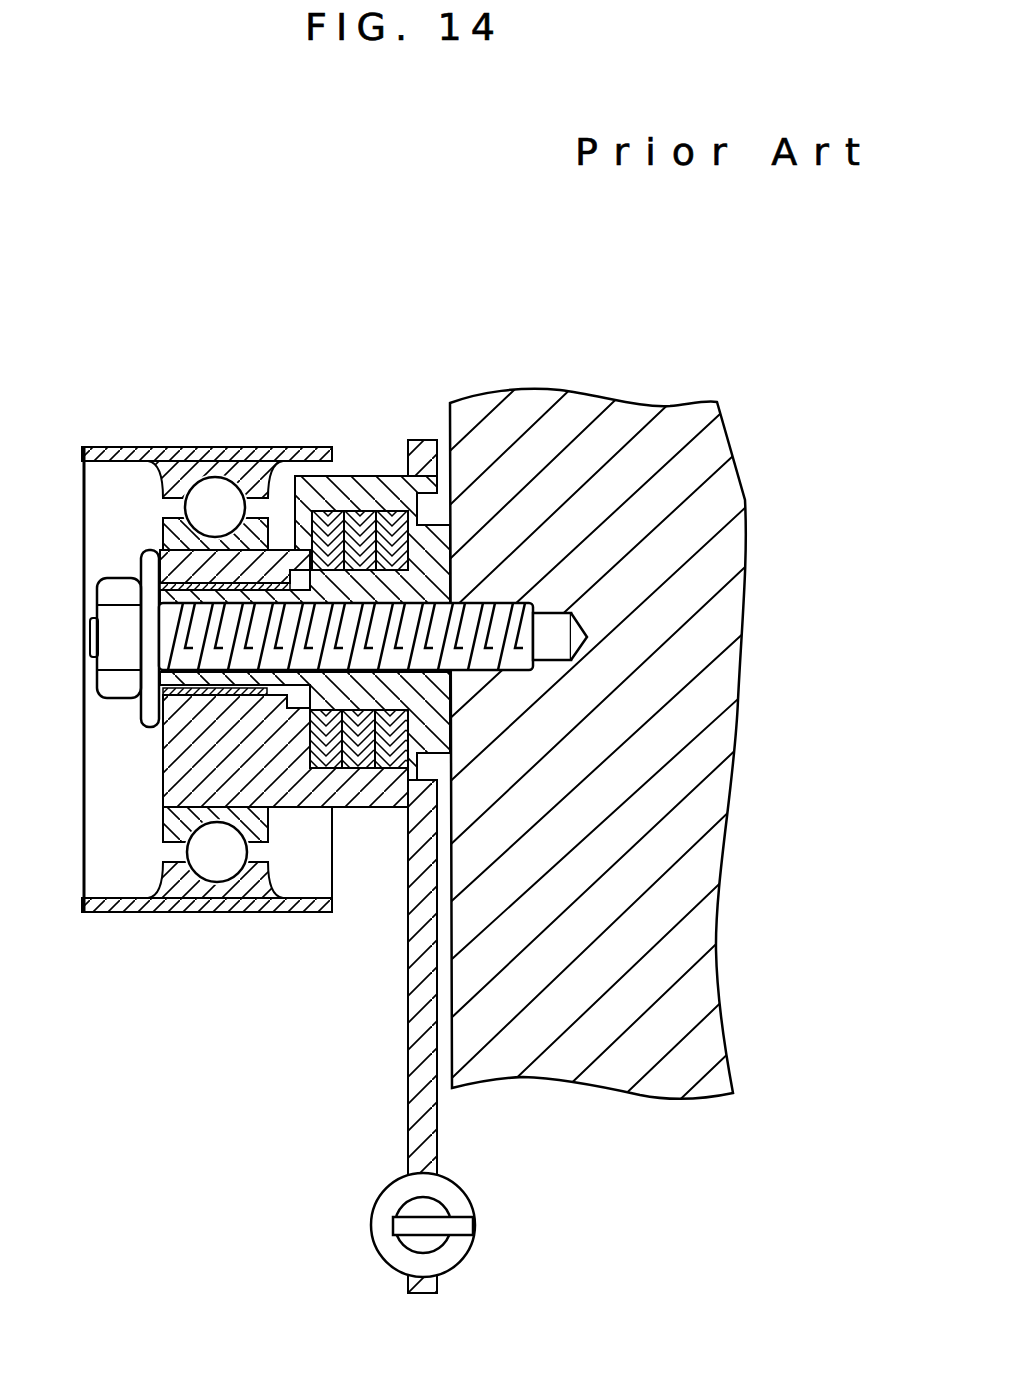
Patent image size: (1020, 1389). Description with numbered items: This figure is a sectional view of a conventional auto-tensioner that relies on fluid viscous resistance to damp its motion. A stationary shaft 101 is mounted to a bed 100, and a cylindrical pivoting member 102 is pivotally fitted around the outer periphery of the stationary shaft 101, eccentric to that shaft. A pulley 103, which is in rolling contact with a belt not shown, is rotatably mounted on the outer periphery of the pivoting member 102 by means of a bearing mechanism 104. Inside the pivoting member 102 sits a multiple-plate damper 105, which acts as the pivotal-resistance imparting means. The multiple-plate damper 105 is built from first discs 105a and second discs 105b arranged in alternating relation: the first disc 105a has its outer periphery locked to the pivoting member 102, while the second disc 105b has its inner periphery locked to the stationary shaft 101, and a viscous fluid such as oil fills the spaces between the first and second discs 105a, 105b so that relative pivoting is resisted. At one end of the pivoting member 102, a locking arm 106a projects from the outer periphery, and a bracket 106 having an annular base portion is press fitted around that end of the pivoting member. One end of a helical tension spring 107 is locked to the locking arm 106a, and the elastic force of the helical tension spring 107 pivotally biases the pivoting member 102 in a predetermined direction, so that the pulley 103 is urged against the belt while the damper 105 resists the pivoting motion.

The bed 100 is at (705, 668).
The stationary shaft 101 is at (436, 745).
The cylindrical pivoting member 102 is at (213, 537).
The pulley 103 is at (132, 912).
The bearing mechanism 104 is at (205, 868).
The multiple-plate damper 105 is at (367, 515).
The first discs 105a is at (333, 770).
The second discs 105b is at (363, 515).
The bracket 106 is at (445, 452).
The locking arm 106a is at (410, 1090).
The helical tension spring 107 is at (457, 1245).